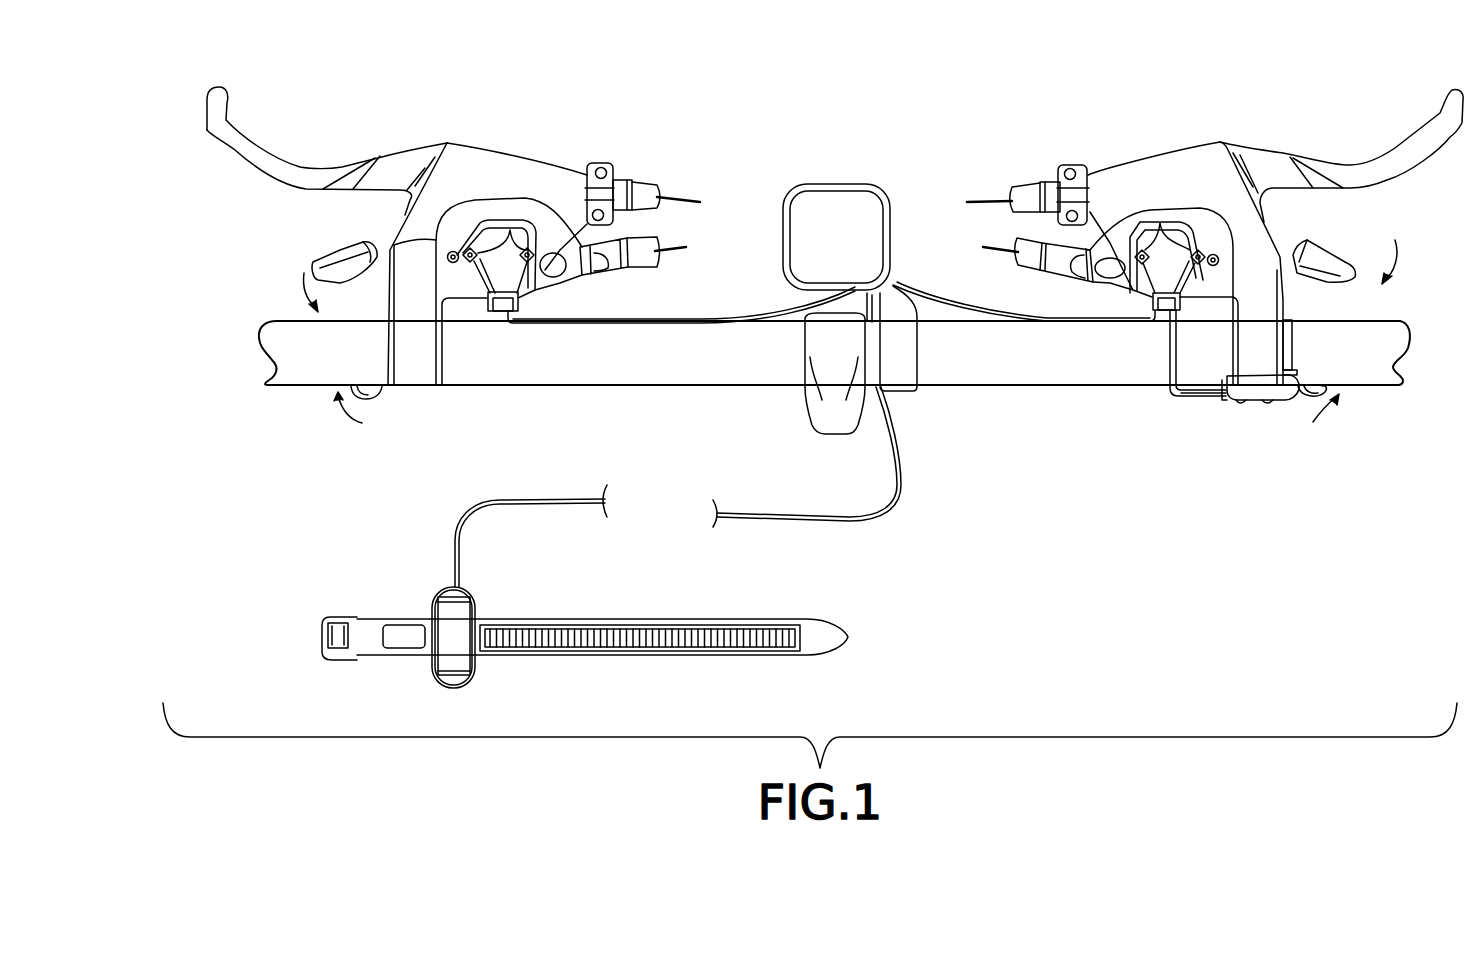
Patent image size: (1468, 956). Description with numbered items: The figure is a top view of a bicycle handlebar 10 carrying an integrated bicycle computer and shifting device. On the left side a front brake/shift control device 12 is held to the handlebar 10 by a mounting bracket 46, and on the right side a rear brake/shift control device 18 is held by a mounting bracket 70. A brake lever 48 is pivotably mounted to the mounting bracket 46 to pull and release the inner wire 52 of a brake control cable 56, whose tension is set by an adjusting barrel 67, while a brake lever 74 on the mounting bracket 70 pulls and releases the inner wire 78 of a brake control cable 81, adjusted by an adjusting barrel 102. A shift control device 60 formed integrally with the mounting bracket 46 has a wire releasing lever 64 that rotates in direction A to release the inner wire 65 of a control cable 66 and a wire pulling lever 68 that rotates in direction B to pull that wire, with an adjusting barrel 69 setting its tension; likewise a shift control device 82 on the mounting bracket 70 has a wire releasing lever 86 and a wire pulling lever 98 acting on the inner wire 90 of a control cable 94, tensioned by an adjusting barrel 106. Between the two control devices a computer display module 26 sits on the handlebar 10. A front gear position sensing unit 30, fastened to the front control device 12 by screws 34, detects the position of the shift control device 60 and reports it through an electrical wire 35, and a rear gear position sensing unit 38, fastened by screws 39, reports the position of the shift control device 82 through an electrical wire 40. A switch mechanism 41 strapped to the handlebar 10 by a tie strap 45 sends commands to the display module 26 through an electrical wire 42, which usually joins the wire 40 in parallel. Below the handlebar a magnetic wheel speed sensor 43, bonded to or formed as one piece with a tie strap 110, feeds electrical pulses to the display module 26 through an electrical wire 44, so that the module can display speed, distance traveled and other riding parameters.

The bicycle handlebar 10 is at (728, 386).
The front brake/shift control device 12 is at (462, 122).
The rear brake/shift control device 18 is at (1184, 126).
The computer display module 26 is at (848, 205).
The front gear position sensing unit 30 is at (513, 305).
The screws 34 is at (510, 230).
The electrical wire 35 is at (755, 319).
The rear gear position sensing unit 38 is at (1143, 290).
The screws 39 is at (1160, 223).
The electrical wire 40 is at (932, 304).
The switch mechanism 41 is at (1263, 388).
The electrical wire 42 is at (1200, 390).
The magnetic wheel speed sensor 43 is at (453, 688).
The electrical wire 44 is at (540, 497).
The tie strap 45 is at (1295, 347).
The mounting bracket 46 is at (447, 143).
The brake lever 48 is at (224, 128).
The inner wire 52 is at (672, 192).
The brake control cable 56 is at (633, 183).
The shift control device 60 is at (451, 298).
The wire releasing lever 64 is at (330, 257).
The inner wire 65 is at (680, 248).
The control cable 66 is at (637, 263).
The adjusting barrel 67 is at (605, 165).
The wire pulling lever 68 is at (370, 397).
The adjusting barrel 69 is at (620, 277).
The mounting bracket 70 is at (1219, 142).
The brake lever 74 is at (1352, 168).
The inner wire 78 is at (985, 200).
The brake control cable 81 is at (1033, 186).
The shift control device 82 is at (1213, 305).
The wire releasing lever 86 is at (1328, 252).
The inner wire 90 is at (980, 246).
The control cable 94 is at (1018, 242).
The wire pulling lever 98 is at (1310, 402).
The adjusting barrel 102 is at (1045, 175).
The adjusting barrel 106 is at (1045, 270).
The tie strap 110 is at (610, 645).